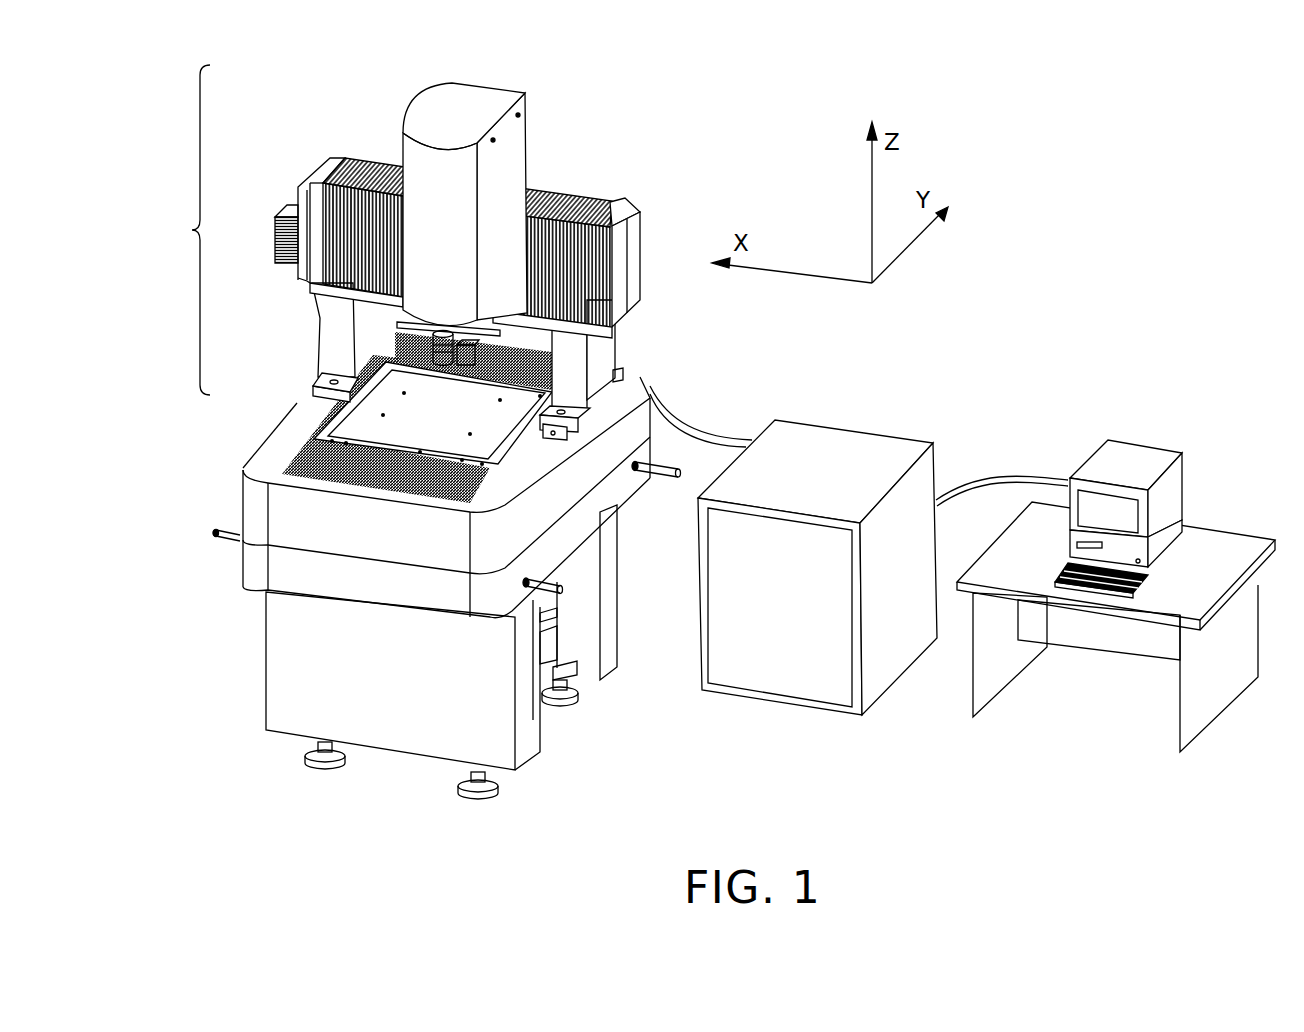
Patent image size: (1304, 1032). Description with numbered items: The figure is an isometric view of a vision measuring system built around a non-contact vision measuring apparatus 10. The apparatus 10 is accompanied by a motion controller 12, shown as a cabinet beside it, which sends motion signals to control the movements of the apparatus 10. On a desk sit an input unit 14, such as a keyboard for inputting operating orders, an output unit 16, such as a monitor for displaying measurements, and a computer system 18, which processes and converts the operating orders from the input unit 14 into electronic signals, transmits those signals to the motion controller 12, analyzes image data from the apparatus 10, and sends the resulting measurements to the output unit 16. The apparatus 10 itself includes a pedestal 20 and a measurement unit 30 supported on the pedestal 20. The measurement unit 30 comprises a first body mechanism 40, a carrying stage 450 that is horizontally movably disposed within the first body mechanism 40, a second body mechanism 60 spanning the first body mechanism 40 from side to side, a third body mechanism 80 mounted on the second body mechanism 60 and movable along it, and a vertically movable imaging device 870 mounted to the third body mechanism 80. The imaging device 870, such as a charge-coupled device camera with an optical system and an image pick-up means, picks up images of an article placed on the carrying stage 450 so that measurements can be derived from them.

The vision measuring apparatus 10 is at (582, 158).
The motion controller 12 is at (835, 455).
The input unit 14 is at (1110, 592).
The output unit 16 is at (1135, 460).
The computer system 18 is at (1073, 550).
The pedestal 20 is at (292, 645).
The measurement unit 30 is at (184, 230).
The first body mechanism 40 is at (288, 427).
The second body mechanism 60 is at (300, 178).
The third body mechanism 80 is at (430, 128).
The carrying stage 450 is at (367, 427).
The imaging device 870 is at (390, 333).